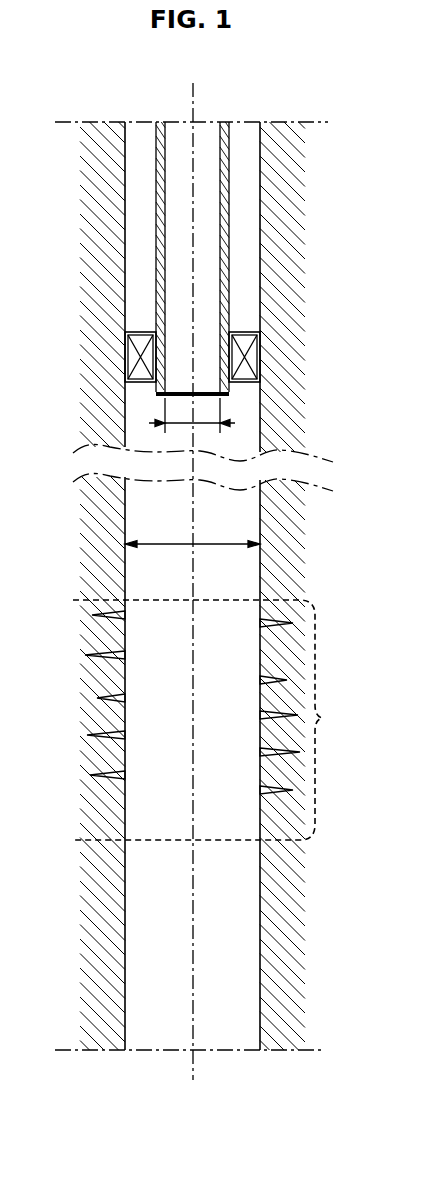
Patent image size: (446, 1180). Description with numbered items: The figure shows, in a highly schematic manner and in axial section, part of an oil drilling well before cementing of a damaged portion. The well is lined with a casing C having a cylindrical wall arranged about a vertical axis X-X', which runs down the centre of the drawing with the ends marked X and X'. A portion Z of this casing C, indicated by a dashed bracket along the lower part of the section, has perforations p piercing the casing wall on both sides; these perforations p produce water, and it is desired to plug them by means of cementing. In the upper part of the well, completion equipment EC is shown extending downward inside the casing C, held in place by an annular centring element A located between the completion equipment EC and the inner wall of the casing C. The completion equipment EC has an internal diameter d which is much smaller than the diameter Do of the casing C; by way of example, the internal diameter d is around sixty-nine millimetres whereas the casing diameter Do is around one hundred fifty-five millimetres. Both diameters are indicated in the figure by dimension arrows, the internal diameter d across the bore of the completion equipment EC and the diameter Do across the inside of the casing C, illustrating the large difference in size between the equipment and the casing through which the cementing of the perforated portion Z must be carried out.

The completion equipment EC is at (232, 277).
The annular centring element A is at (253, 358).
The internal diameter d is at (192, 415).
The casing C is at (127, 514).
The diameter of the casing Do is at (192, 534).
The perforations p is at (125, 655).
The portion of the casing Z is at (210, 720).
The vertical axis X is at (205, 842).
The vertical axis X' is at (205, 339).